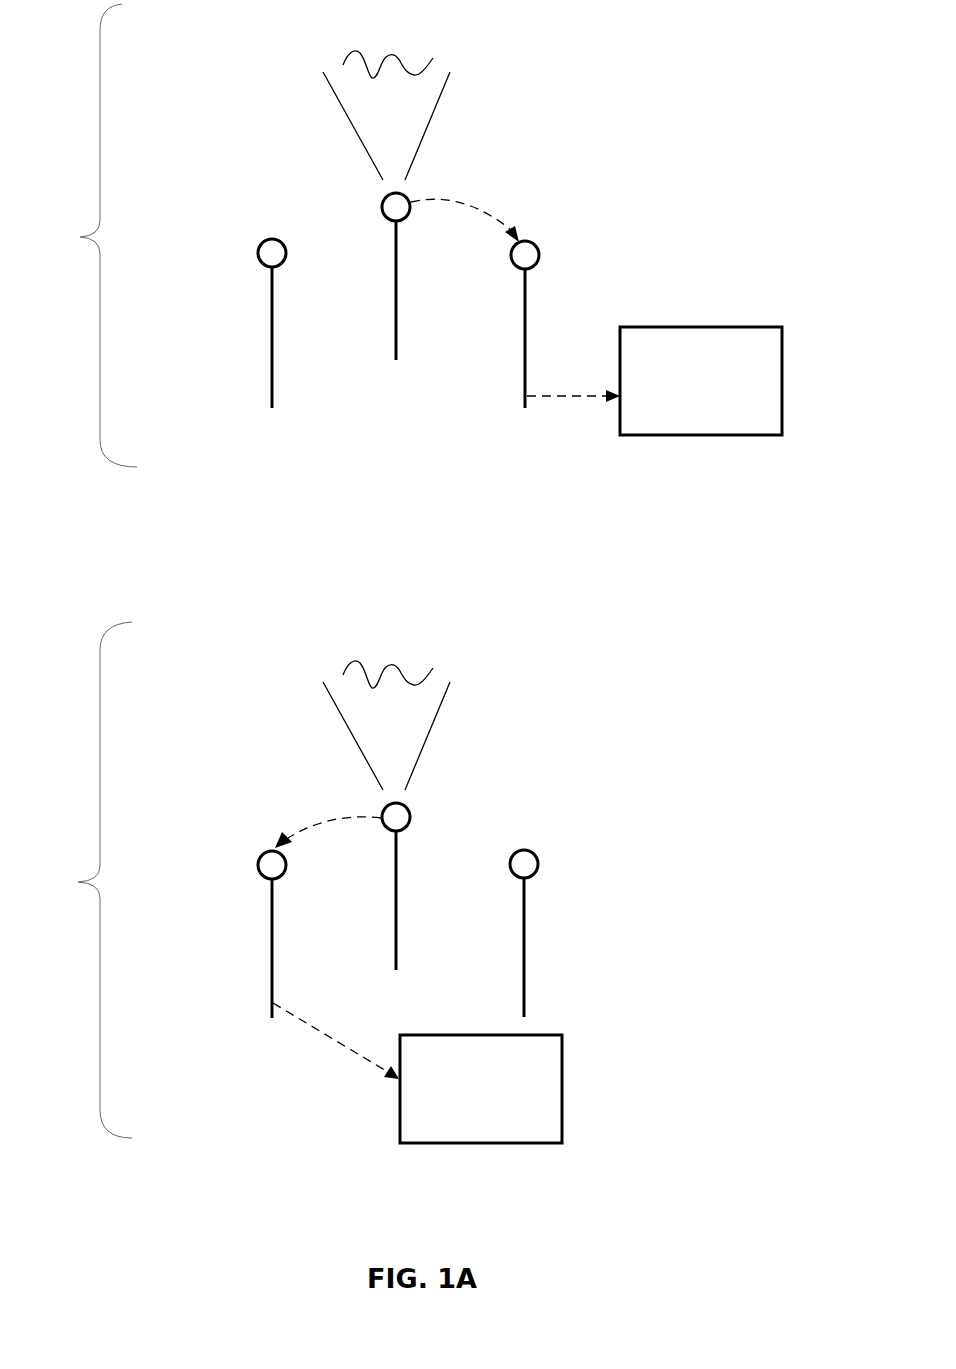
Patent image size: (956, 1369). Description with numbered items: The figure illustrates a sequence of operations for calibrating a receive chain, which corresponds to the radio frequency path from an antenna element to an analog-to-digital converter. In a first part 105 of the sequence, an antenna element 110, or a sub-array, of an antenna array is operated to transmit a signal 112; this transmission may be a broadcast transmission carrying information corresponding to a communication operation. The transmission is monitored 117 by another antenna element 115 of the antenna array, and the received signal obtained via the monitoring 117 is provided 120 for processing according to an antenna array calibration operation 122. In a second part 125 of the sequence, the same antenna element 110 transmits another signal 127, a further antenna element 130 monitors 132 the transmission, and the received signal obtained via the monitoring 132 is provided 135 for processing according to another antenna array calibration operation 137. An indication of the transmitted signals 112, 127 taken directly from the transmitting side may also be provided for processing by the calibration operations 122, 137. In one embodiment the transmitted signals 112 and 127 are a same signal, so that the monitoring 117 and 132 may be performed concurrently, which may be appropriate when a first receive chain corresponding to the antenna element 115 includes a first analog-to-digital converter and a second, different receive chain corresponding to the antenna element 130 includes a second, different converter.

The first part of the sequence 105 is at (83, 235).
The antenna element 110 is at (383, 194).
The signal 112 is at (366, 47).
The another antenna element 115 is at (511, 249).
The monitoring 117 is at (465, 206).
The providing 120 is at (598, 396).
The antenna array calibration operation 122 is at (701, 381).
The second part of the sequence 125 is at (81, 880).
The another signal 127 is at (366, 657).
The further antenna element 130 is at (259, 864).
The monitoring 132 is at (328, 832).
The providing 135 is at (368, 1052).
The another antenna array calibration operation 137 is at (481, 1089).